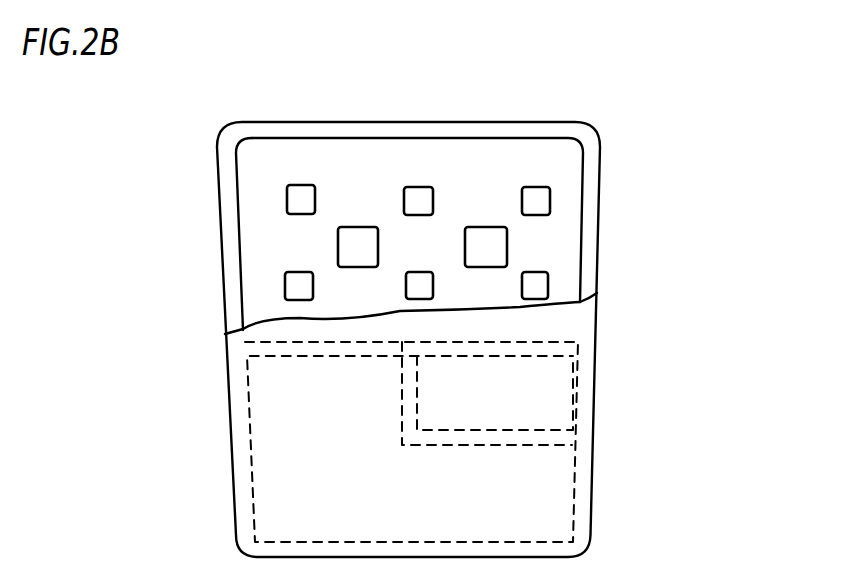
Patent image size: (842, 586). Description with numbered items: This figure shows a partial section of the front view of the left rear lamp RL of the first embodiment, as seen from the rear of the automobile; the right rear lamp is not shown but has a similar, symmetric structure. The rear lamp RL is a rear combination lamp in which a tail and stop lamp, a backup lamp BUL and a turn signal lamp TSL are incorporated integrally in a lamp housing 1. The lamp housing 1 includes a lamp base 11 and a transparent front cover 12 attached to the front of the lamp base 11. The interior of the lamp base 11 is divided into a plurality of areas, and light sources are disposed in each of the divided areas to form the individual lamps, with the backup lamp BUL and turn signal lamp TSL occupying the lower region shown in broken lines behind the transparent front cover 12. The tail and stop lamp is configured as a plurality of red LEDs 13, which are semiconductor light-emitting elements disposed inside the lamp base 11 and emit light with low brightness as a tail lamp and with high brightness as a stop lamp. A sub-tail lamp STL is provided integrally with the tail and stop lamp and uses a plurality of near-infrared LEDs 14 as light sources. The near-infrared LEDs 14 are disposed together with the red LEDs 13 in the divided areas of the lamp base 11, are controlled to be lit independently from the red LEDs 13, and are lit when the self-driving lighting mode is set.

The lamp housing 1 is at (602, 150).
The lamp base 11 is at (362, 124).
The transparent front cover 12 is at (240, 380).
The red LEDs 13 is at (421, 195).
The near-infrared LEDs 14 is at (350, 242).
The rear lamp RL is at (606, 188).
The sub-tail lamp STL is at (220, 233).
The turn signal lamp TSL is at (563, 407).
The backup lamp BUL is at (540, 503).